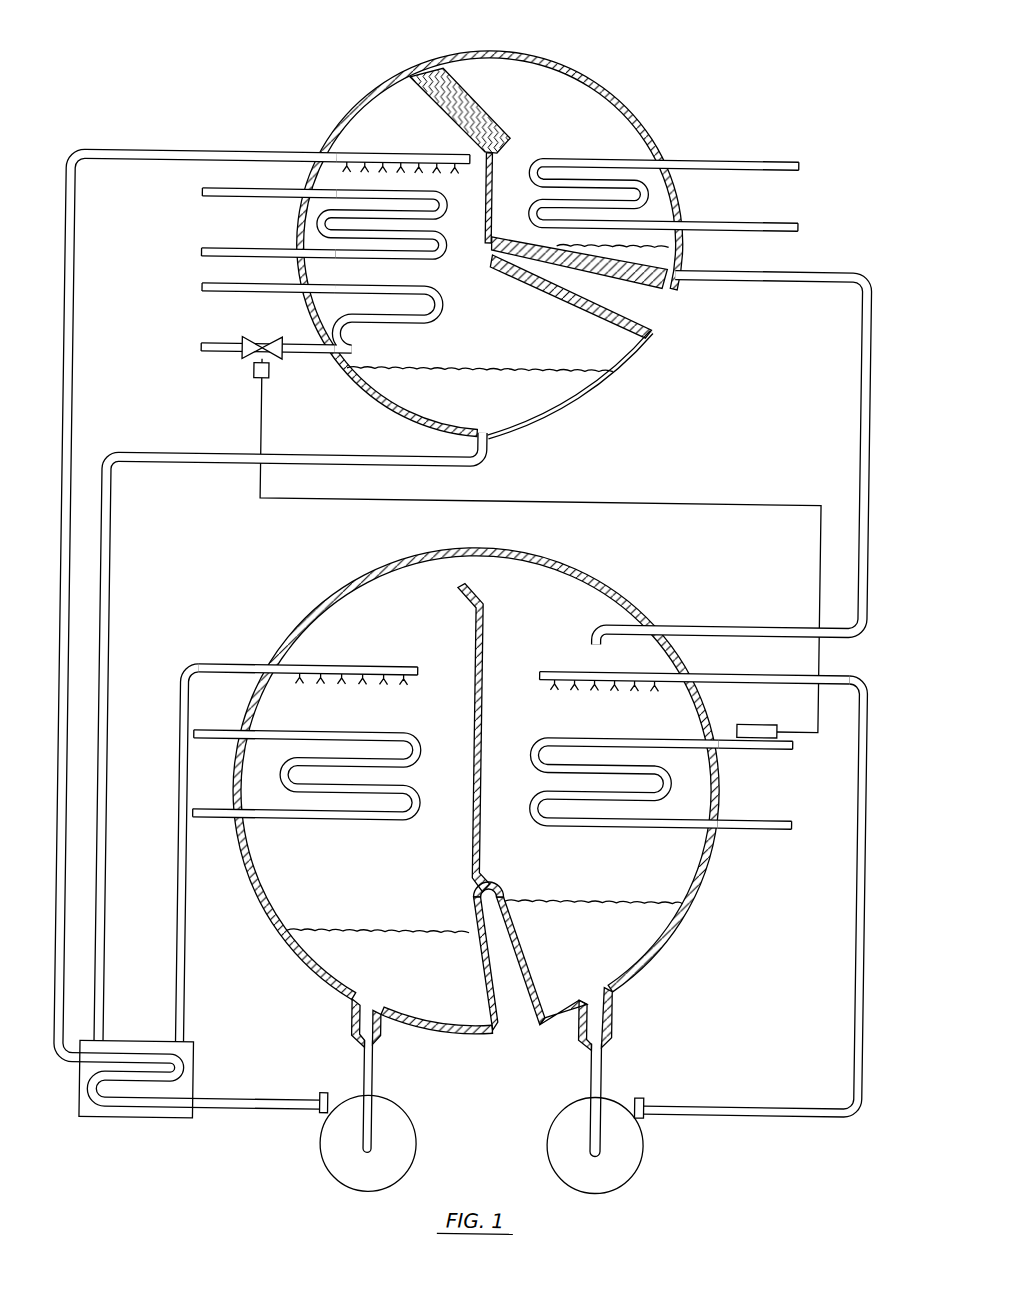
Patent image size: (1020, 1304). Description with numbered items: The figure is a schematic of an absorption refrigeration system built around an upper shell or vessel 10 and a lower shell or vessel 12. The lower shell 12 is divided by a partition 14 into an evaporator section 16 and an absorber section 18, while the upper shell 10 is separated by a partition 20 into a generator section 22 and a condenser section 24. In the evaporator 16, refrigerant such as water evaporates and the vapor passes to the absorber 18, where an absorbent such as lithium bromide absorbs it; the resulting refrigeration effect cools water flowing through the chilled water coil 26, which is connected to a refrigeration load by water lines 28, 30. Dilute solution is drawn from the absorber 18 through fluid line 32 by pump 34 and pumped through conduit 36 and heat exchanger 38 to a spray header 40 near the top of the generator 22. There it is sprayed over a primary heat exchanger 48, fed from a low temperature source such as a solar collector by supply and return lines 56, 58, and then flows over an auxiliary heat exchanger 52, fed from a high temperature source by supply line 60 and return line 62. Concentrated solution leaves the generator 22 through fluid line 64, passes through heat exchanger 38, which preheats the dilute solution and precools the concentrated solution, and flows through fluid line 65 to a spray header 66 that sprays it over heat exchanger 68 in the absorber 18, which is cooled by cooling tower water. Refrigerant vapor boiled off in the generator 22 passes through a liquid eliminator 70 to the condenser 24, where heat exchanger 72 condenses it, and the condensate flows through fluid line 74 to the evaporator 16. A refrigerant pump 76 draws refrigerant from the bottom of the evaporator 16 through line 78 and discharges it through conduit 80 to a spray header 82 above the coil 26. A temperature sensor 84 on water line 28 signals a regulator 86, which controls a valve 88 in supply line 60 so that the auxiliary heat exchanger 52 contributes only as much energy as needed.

The upper shell or vessel 10 is at (583, 66).
The lower shell or vessel 12 is at (287, 599).
The partition 14 is at (469, 626).
The evaporator section 16 is at (594, 801).
The absorber section 18 is at (379, 815).
The partition 20 is at (474, 185).
The generator section 22 is at (480, 316).
The condenser section 24 is at (610, 183).
The heat exchanging coil 26 is at (610, 828).
The water line 28 is at (752, 748).
The water line 30 is at (748, 827).
The fluid line 32 is at (365, 1070).
The pump 34 is at (329, 1172).
The conduit 36 is at (76, 415).
The heat exchanger 38 is at (142, 1126).
The spray header or nozzle 40 is at (411, 153).
The primary heat exchanger 48 is at (316, 228).
The auxiliary heat exchanger 52 is at (328, 321).
The fluid supply line 56 is at (216, 251).
The fluid return line 58 is at (215, 189).
The supply line 60 is at (210, 347).
The return line 62 is at (216, 288).
The fluid line 64 is at (111, 542).
The fluid line 65 is at (187, 989).
The spray header or nozzle 66 is at (340, 666).
The heat exchanger 68 is at (346, 832).
The liquid eliminator 70 is at (442, 101).
The heat exchanger 72 is at (648, 188).
The fluid line 74 is at (866, 420).
The refrigerant pump 76 is at (644, 1168).
The line 78 is at (611, 1070).
The conduit 80 is at (860, 1010).
The spray header 82 is at (575, 668).
The temperature sensor 84 is at (749, 721).
The regulator 86 is at (266, 385).
The valve 88 is at (253, 344).